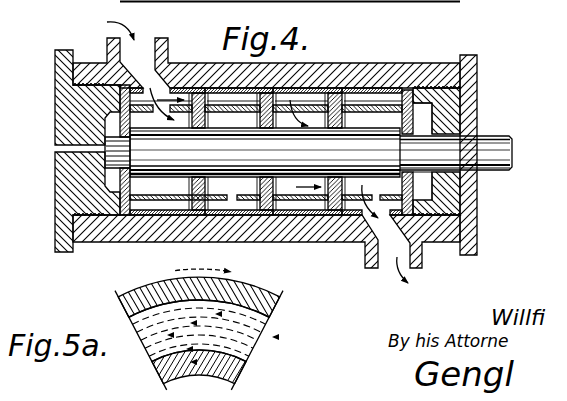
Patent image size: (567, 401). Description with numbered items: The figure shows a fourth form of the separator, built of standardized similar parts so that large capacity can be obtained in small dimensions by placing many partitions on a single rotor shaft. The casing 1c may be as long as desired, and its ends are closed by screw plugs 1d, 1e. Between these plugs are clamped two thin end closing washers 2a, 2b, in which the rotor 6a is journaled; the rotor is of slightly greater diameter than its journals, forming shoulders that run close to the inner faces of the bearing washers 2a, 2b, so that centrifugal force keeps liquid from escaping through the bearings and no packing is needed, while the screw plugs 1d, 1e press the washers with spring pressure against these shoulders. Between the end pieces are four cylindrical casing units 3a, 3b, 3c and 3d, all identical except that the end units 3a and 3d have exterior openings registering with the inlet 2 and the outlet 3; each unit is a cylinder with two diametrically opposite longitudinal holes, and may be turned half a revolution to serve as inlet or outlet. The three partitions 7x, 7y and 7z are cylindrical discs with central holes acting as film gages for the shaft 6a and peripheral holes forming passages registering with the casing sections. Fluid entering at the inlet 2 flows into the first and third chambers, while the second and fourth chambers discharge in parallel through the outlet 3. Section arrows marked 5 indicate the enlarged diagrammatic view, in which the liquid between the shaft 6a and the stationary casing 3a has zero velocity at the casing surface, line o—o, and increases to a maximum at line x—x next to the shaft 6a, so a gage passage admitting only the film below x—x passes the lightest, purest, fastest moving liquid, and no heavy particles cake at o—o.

In FIG. 4, the casing 1c is at (385, 65).
In FIG. 4, the screw plug 1d is at (68, 114).
In FIG. 4, the screw plug 1e is at (462, 108).
In FIG. 4, the inlet 2 is at (143, 43).
In FIG. 4, the end closing washer 2a is at (118, 186).
In FIG. 4, the end closing washer 2b is at (414, 190).
In FIG. 4, the outlet 3 is at (422, 262).
In FIG. 4, the cylindrical casing unit 3a is at (153, 214).
In FIG. 5A, the cylindrical casing unit 3a is at (240, 295).
In FIG. 4, the cylindrical casing unit 3b is at (245, 216).
In FIG. 4, the cylindrical casing unit 3c is at (312, 214).
In FIG. 4, the cylindrical casing unit 3d is at (352, 218).
In FIG. 4, the section line 5- 5 is at (375, 55).
In FIG. 4, the rotor 6a is at (308, 152).
In FIG. 5A, the rotor 6a is at (213, 371).
In FIG. 4, the partition 7x is at (208, 120).
In FIG. 4, the partition 7y is at (276, 120).
In FIG. 4, the partition 7z is at (345, 125).
In FIG. 5A, the line o— o is at (129, 318).
In FIG. 5A, the line x— x is at (152, 361).